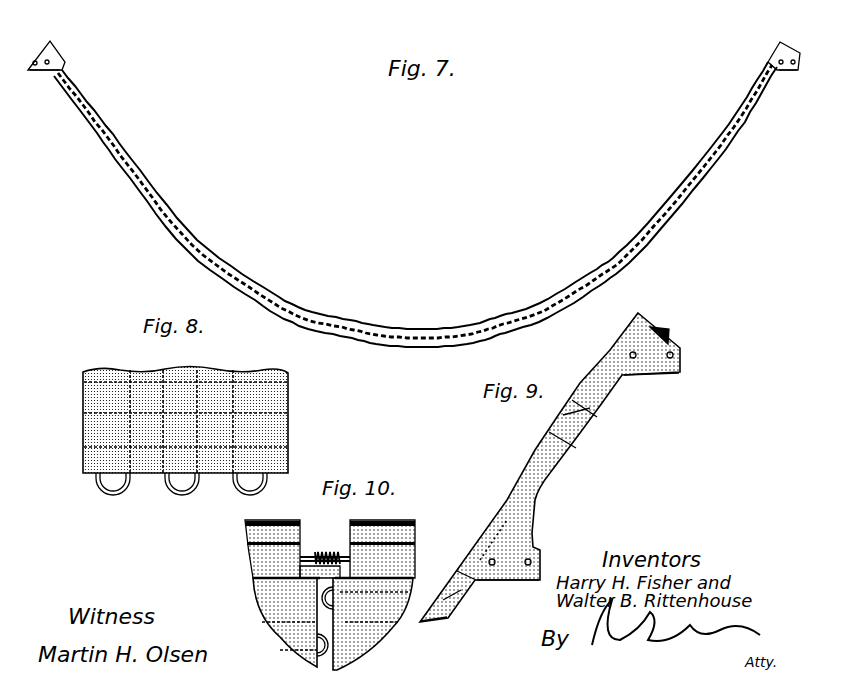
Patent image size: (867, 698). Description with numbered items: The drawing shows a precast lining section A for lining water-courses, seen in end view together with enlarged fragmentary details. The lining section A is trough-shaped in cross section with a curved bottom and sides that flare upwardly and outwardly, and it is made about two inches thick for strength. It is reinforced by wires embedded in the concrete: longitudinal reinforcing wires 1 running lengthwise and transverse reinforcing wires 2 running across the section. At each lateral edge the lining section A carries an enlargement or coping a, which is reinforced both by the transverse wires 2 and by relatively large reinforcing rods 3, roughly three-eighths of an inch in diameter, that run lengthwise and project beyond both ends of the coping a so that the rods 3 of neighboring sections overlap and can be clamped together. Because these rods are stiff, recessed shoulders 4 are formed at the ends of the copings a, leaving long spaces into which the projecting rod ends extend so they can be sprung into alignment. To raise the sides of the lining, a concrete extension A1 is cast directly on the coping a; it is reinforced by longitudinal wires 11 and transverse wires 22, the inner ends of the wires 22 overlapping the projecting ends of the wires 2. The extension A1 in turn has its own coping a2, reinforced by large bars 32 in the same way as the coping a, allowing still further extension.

In FIG. 7, the lining section A is at (415, 195).
In FIG. 9, the lining section A is at (434, 632).
In FIG. 10, the lining section A is at (327, 624).
In FIG. 7, the longitudinal reinforcing wires 1 is at (329, 323).
In FIG. 8, the longitudinal reinforcing wires 1 is at (97, 456).
In FIG. 9, the longitudinal reinforcing wires 1 is at (466, 590).
In FIG. 10, the longitudinal reinforcing wires 1 is at (325, 621).
In FIG. 7, the transverse reinforcing wires 2 is at (385, 333).
In FIG. 8, the transverse reinforcing wires 2 is at (114, 380).
In FIG. 9, the transverse reinforcing wires 2 is at (450, 598).
In FIG. 7, the reinforcing rods 3 is at (38, 63).
In FIG. 9, the reinforcing rods 3 is at (494, 566).
In FIG. 10, the reinforcing rods 3 is at (342, 553).
In FIG. 10, the recessed shoulders 4 is at (325, 573).
In FIG. 7, the coping a is at (43, 71).
In FIG. 9, the coping a is at (528, 566).
In FIG. 10, the coping a is at (328, 549).
In FIG. 9, the concrete extension A1 is at (550, 467).
In FIG. 9, the longitudinal reinforcing wires of extension 11 is at (552, 433).
In FIG. 9, the transverse reinforcing wires of extension 22 is at (583, 430).
In FIG. 9, the reinforcing bars of extension coping 32 is at (671, 352).
In FIG. 9, the coping of extension a2 is at (664, 376).